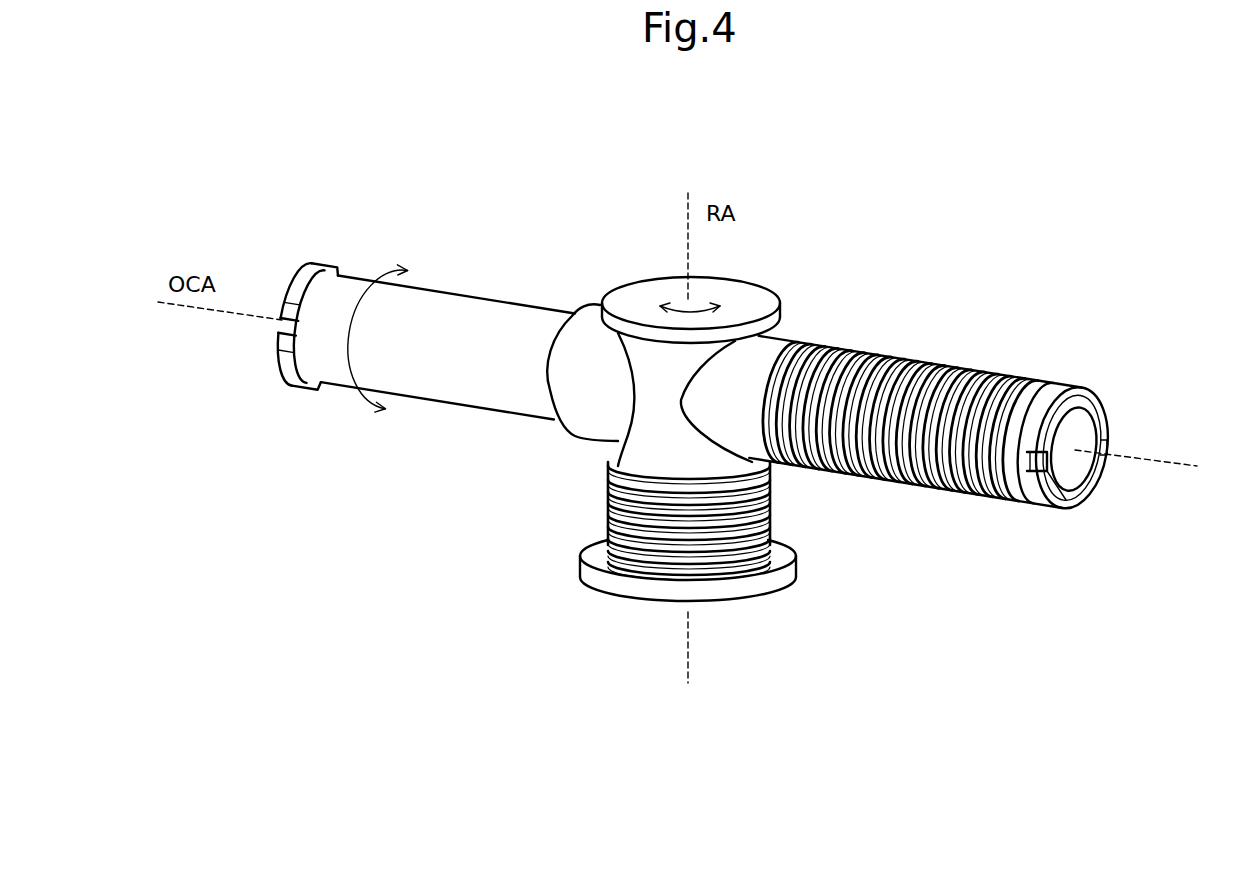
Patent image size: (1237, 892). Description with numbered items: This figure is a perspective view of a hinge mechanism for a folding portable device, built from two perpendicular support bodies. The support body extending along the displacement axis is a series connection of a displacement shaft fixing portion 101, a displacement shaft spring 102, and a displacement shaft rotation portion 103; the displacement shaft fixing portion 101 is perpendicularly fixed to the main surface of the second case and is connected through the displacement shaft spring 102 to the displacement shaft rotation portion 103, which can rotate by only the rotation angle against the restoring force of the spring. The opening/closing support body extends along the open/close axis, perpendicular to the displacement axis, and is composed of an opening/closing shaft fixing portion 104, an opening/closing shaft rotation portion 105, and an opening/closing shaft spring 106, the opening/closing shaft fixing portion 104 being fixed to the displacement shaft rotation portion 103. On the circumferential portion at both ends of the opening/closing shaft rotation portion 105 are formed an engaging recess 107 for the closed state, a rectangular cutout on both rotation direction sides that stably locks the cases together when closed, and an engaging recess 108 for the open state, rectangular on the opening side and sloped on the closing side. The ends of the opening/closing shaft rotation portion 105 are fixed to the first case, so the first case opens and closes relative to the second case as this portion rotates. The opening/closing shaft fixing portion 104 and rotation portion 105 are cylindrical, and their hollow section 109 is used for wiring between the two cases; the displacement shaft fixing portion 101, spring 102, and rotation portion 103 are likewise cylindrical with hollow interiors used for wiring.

The displacement shaft fixing portion 101 is at (578, 558).
The displacement shaft spring 102 is at (771, 509).
The displacement shaft rotation portion 103 is at (628, 451).
The opening/closing shaft fixing portion 104 is at (760, 337).
The opening/closing shaft rotation portion 105 is at (470, 296).
The opening/closing shaft spring 106 is at (992, 376).
The engaging recess for closed state 107 is at (1073, 509).
The engaging recess for open state 108 is at (284, 320).
The hollow section 109 is at (1080, 421).